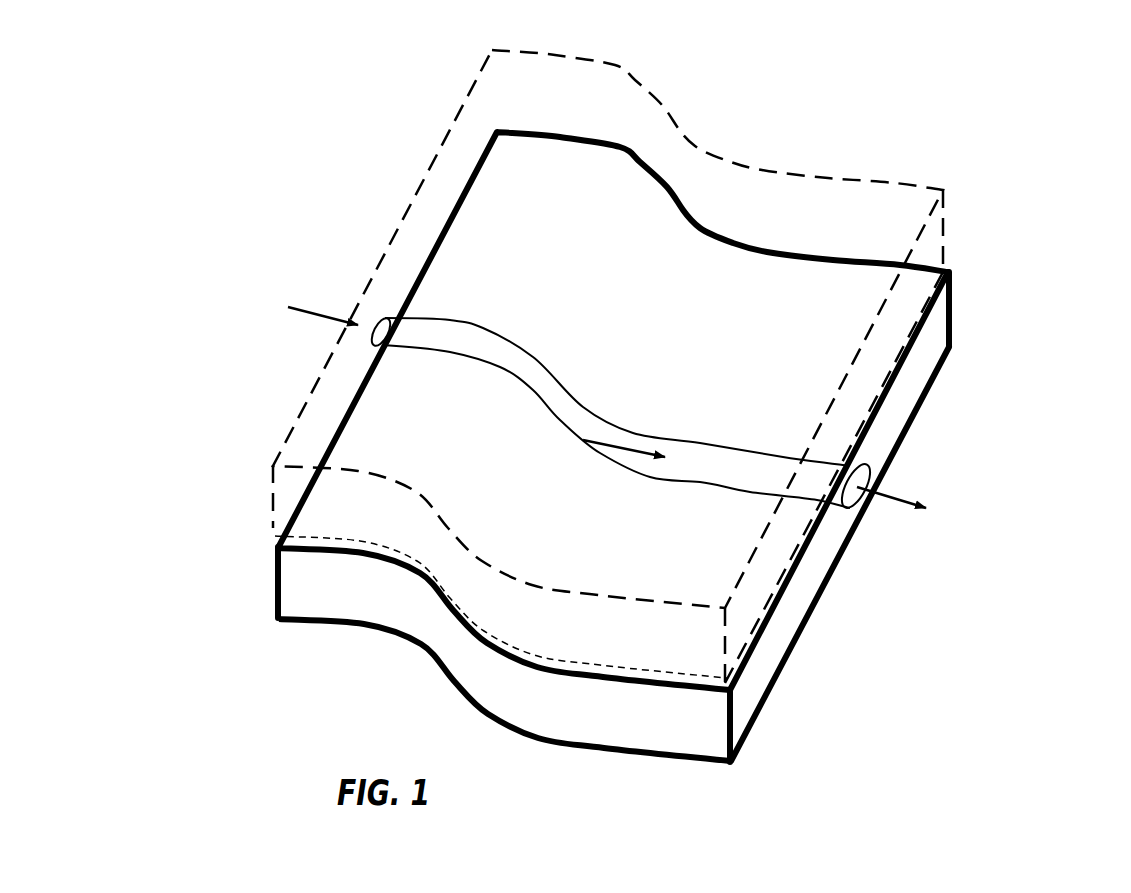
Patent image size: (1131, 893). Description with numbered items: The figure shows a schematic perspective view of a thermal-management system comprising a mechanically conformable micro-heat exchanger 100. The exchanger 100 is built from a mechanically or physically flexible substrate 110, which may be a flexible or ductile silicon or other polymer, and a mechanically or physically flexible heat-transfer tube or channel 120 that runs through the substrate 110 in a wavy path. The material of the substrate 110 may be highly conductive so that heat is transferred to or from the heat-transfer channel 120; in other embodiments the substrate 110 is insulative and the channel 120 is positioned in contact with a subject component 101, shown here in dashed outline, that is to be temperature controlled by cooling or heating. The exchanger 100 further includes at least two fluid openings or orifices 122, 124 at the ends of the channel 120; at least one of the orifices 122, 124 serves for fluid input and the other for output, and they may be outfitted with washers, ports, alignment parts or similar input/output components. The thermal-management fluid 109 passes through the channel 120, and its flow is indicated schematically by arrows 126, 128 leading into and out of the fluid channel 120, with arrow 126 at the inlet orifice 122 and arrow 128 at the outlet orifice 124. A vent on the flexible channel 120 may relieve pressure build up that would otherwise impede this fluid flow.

The mechanically conformable micro-heat exchanger 100 is at (686, 447).
The subject component 101 is at (977, 176).
The thermal-management fluid 109 is at (583, 440).
The flexible substrate 110 is at (683, 727).
The flexible heat-transfer channel 120 is at (619, 416).
The fluid orifice 122 is at (394, 306).
The fluid orifice 124 is at (840, 518).
The fluid flow arrow 126 is at (324, 318).
The fluid flow arrow 128 is at (896, 497).